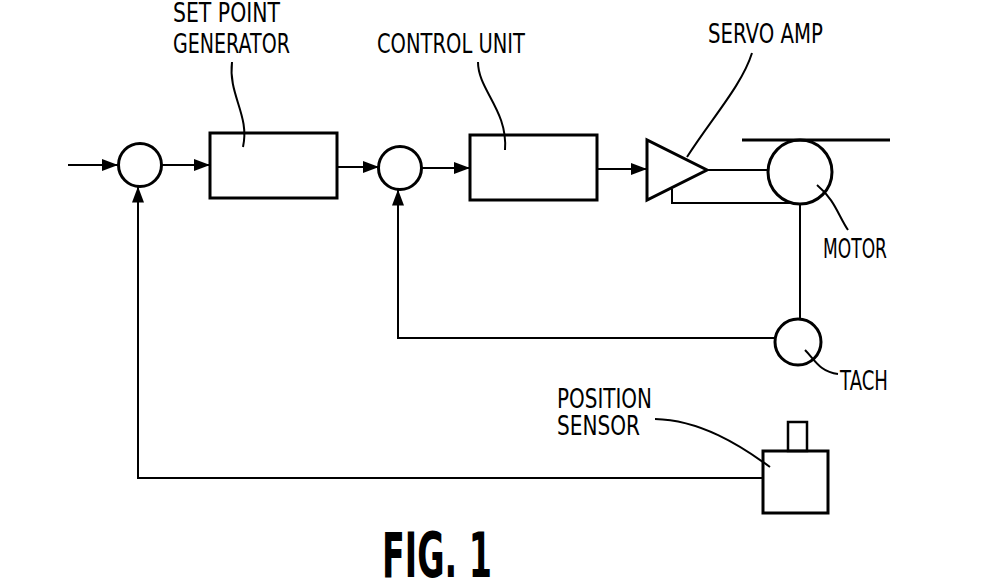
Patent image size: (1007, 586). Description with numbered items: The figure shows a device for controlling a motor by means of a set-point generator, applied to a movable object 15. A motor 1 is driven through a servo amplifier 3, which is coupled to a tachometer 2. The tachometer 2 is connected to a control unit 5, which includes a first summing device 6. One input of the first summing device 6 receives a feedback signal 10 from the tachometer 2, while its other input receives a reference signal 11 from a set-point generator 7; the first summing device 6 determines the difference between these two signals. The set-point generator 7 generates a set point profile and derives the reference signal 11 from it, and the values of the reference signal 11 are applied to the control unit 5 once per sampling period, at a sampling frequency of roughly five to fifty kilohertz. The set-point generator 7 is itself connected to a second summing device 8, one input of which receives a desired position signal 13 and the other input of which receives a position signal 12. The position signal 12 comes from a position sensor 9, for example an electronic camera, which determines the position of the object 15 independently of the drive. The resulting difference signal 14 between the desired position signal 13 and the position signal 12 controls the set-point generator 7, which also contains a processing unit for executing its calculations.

The motor 1 is at (834, 178).
The tachometer 2 is at (822, 338).
The servo amplifier 3 is at (665, 157).
The control unit 5 is at (553, 147).
The first summing device 6 is at (400, 146).
The set-point generator 7 is at (288, 147).
The second summing device 8 is at (139, 143).
The position sensor 9 is at (835, 476).
The feedback signal 10 is at (587, 336).
The reference signal 11 is at (344, 172).
The position signal 12 is at (139, 295).
The desired position signal 13 is at (85, 170).
The difference signal 14 is at (176, 162).
The movable object 15 is at (862, 138).